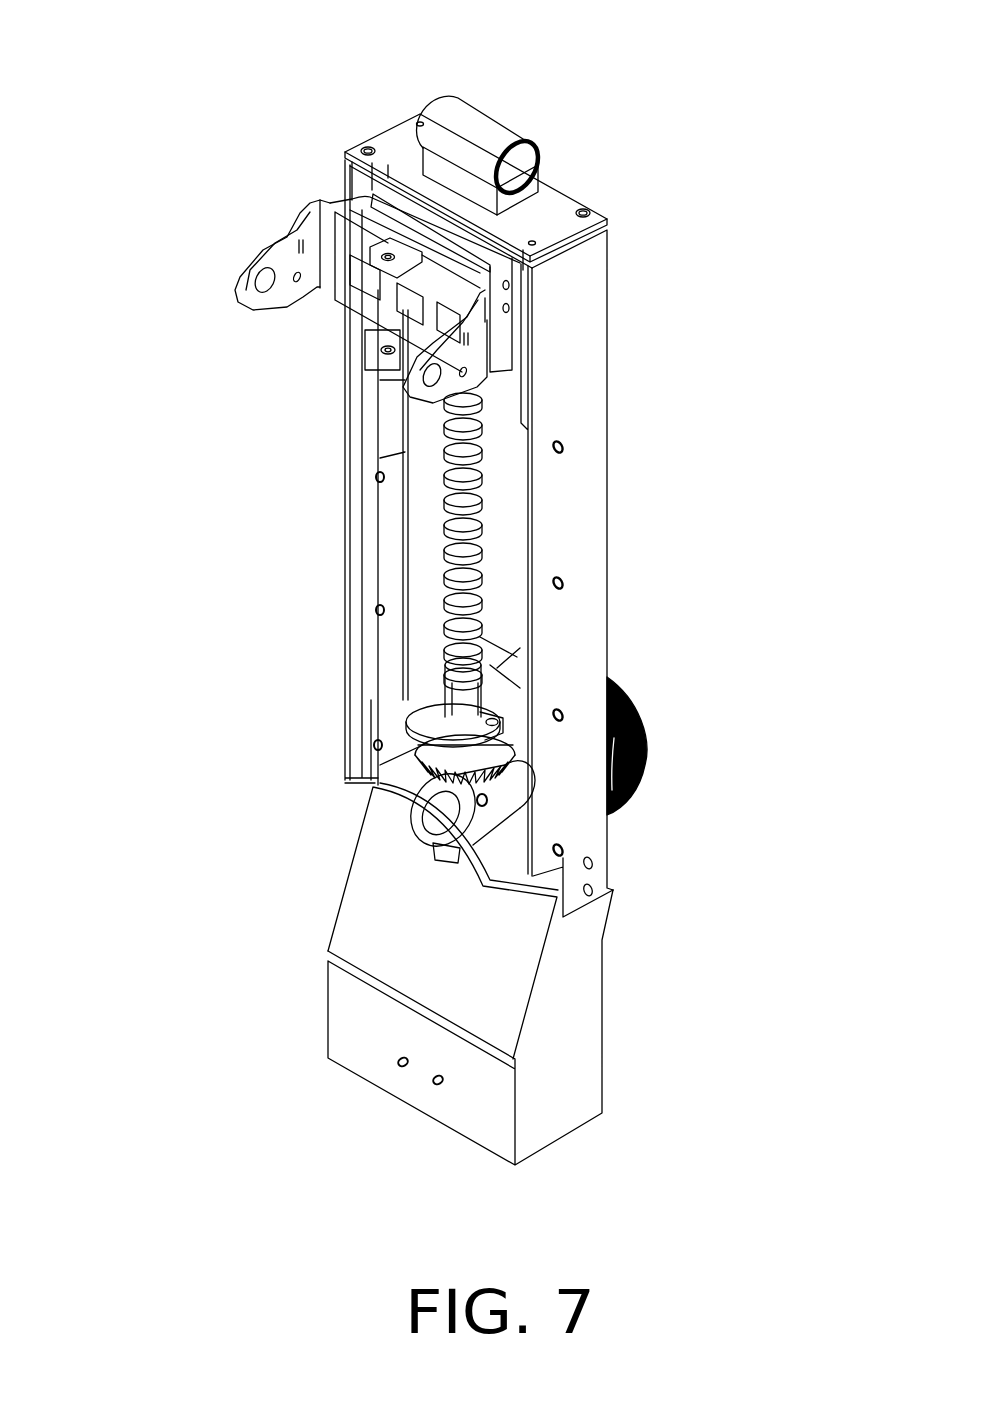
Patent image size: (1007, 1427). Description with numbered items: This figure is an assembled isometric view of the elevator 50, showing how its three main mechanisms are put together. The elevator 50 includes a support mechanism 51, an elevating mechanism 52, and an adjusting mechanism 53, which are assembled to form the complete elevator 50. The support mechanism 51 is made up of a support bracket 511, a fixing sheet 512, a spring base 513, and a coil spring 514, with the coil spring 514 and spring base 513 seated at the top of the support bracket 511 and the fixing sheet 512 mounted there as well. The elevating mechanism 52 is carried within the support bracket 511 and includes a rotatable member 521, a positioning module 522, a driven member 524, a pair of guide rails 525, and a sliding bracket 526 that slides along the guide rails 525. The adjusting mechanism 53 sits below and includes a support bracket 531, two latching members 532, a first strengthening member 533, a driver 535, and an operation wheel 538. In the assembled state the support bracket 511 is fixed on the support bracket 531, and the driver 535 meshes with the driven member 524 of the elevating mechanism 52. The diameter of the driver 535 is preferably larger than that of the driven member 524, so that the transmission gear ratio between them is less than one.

The elevator 50 is at (290, 70).
The support mechanism 51 is at (732, 25).
The support bracket 511 is at (585, 305).
The fixing sheet 512 is at (563, 223).
The spring base 513 is at (543, 177).
The coil spring 514 is at (497, 130).
The elevating mechanism 52 is at (137, 333).
The rotatable member 521 is at (447, 568).
The positioning module 522 is at (443, 712).
The driven member 524 is at (373, 785).
The guide rails 525 is at (383, 493).
The sliding bracket 526 is at (320, 290).
The adjusting mechanism 53 is at (790, 700).
The support bracket 531 is at (570, 1010).
The latching members 532 is at (453, 860).
The first strengthening member 533 is at (443, 817).
The driver 535 is at (517, 783).
The operation wheel 538 is at (643, 737).